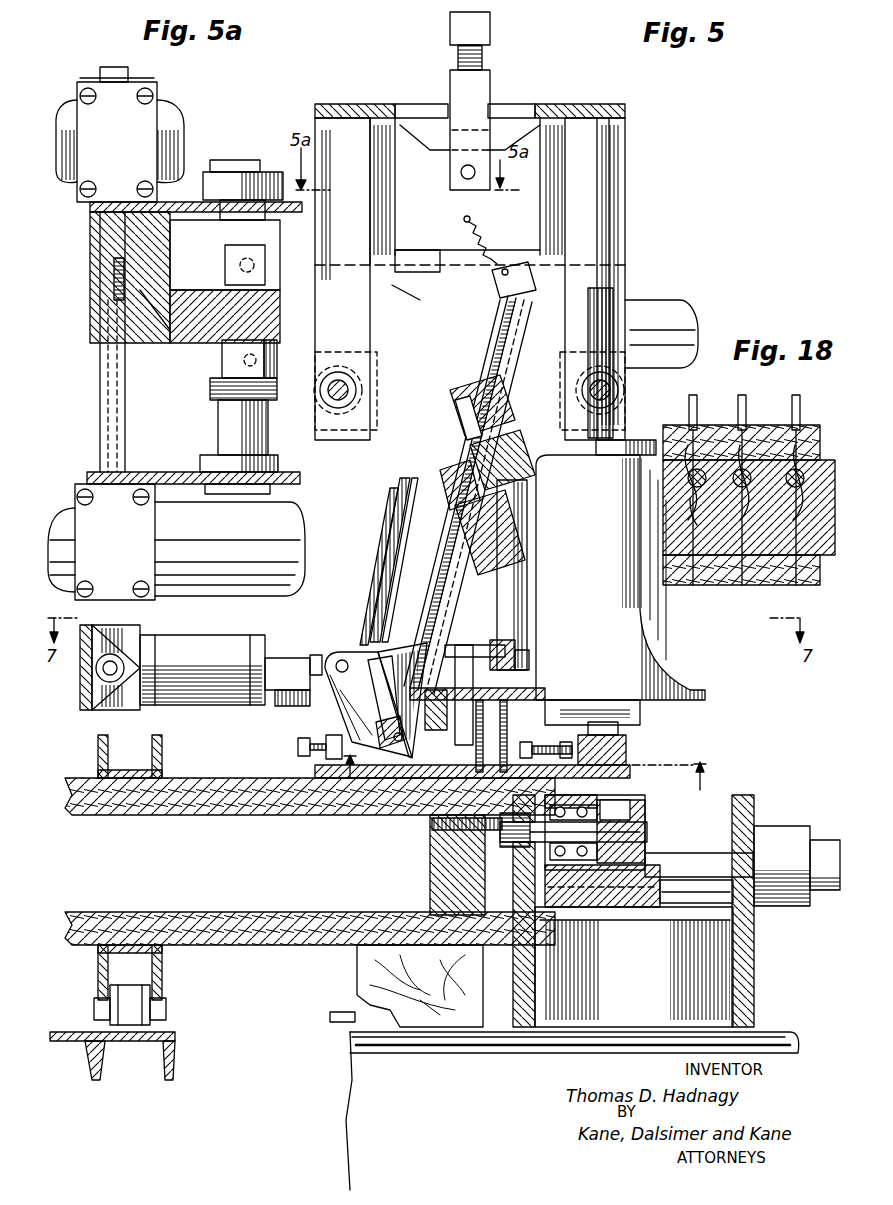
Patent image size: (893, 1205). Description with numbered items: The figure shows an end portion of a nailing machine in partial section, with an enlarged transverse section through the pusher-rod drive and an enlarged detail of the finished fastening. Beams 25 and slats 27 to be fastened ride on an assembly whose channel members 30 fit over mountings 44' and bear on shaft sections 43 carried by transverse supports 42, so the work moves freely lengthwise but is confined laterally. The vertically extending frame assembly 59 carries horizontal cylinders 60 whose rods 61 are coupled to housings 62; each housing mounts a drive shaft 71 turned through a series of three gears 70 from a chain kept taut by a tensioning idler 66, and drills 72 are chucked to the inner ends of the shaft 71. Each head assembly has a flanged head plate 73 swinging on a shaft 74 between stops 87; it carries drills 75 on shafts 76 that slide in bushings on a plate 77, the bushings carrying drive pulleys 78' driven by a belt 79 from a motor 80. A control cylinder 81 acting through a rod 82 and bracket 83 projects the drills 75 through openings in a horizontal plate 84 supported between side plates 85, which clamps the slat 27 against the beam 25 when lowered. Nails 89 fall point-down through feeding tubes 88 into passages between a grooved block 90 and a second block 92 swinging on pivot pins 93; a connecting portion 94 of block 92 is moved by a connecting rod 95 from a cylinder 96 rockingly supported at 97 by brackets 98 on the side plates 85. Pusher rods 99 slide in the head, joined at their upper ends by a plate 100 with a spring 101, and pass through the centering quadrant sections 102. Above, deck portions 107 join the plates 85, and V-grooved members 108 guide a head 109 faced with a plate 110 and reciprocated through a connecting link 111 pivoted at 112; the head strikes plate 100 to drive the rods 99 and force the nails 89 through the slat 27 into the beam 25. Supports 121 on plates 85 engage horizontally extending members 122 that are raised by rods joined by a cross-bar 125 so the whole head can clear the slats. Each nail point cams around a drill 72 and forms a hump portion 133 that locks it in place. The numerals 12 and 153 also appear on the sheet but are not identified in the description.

In FIG. 5, the base plate 12 is at (537, 772).
In FIG. 5, the beam 25 is at (430, 882).
In FIG. 5, the slat 27 is at (235, 815).
In FIG. 18, the slat 27 is at (708, 430).
In FIG. 5, the channel member 30 is at (98, 750).
In FIG. 5, the support 42 is at (176, 1062).
In FIG. 5, the shaft section 43 is at (160, 1010).
In FIG. 5, the mounting 44' is at (158, 993).
In FIG. 5, the frame assembly 59 is at (748, 795).
In FIG. 5, the cylinder 60 is at (818, 905).
In FIG. 5, the rod 61 is at (690, 852).
In FIG. 5, the housing 62 is at (590, 765).
In FIG. 5, the tensioning idler 66 is at (528, 752).
In FIG. 5, the gear 70 is at (612, 800).
In FIG. 5, the drive shaft 71 is at (640, 826).
In FIG. 5, the drill 72 is at (432, 826).
In FIG. 18, the drill 72 is at (763, 519).
In FIG. 5, the head plate 73 is at (500, 438).
In FIG. 5, the shaft 74 is at (450, 430).
In FIG. 5, the drill 75 is at (491, 736).
In FIG. 5, the shaft 76 is at (466, 645).
In FIG. 5, the plate 77 is at (520, 688).
In FIG. 5, the drive pulley 78' is at (432, 727).
In FIG. 5, the belt 79 is at (565, 702).
In FIG. 5, the motor 80 is at (620, 570).
In FIG. 5, the control cylinder 81 is at (512, 532).
In FIG. 5, the rod 82 is at (515, 650).
In FIG. 5, the bracket 83 is at (530, 660).
In FIG. 5, the plate 84 is at (610, 790).
In FIG. 5A, the side plate 85 is at (176, 472).
In FIG. 5, the side plate 85 is at (345, 503).
In FIG. 5, the stop 87 is at (572, 750).
In FIG. 5, the feeding tube 88 is at (390, 540).
In FIG. 18, the nail 89 is at (812, 428).
In FIG. 5, the block 90 is at (402, 700).
In FIG. 5, the second block 92 is at (381, 698).
In FIG. 5, the pivot pin 93 is at (380, 727).
In FIG. 5, the connecting portion 94 is at (337, 655).
In FIG. 5, the connecting rod 95 is at (298, 658).
In FIG. 5, the cylinder 96 is at (202, 670).
In FIG. 5, the rocking support 97 is at (116, 660).
In FIG. 5, the bracket 98 is at (80, 690).
In FIG. 5, the pusher rod 99 is at (510, 318).
In FIG. 5A, the plate 100 is at (222, 359).
In FIG. 5, the plate 100 is at (498, 292).
In FIG. 5, the spring 101 is at (498, 236).
In FIG. 5, the quadrant section 102 is at (326, 735).
In FIG. 5, the deck portion 107 is at (600, 106).
In FIG. 5A, the member 108 is at (90, 254).
In FIG. 5, the member 108 is at (318, 130).
In FIG. 5A, the head 109 is at (188, 288).
In FIG. 5, the head 109 is at (428, 173).
In FIG. 5A, the plate 110 is at (210, 385).
In FIG. 5, the plate 110 is at (424, 300).
In FIG. 5, the connecting link 111 is at (478, 98).
In FIG. 5, the pivot 112 is at (462, 177).
In FIG. 5A, the support 121 is at (270, 466).
In FIG. 5, the support 121 is at (628, 380).
In FIG. 5A, the horizontally extending member 122 is at (176, 549).
In FIG. 5, the horizontally extending member 122 is at (660, 305).
In FIG. 18, the cross-bar 125 is at (818, 588).
In FIG. 18, the hump portion 133 is at (755, 455).
In FIG. 18, the hook 153 is at (742, 487).